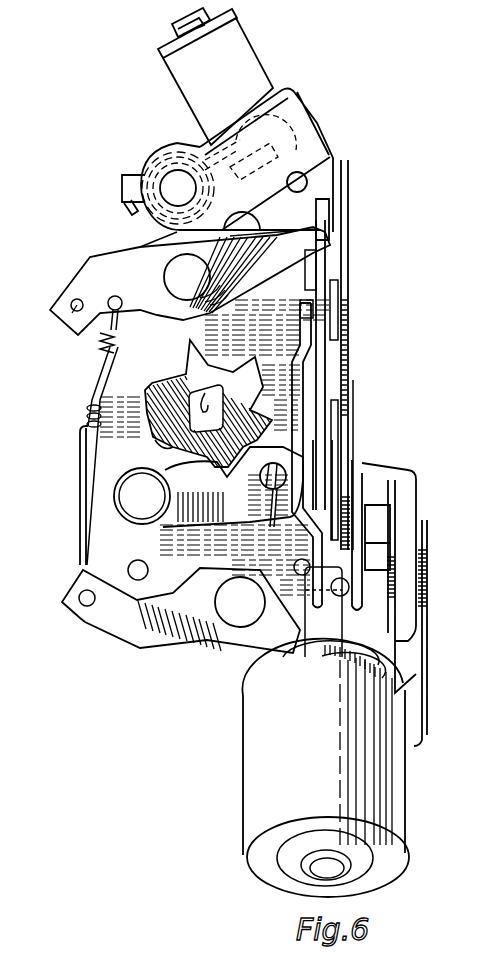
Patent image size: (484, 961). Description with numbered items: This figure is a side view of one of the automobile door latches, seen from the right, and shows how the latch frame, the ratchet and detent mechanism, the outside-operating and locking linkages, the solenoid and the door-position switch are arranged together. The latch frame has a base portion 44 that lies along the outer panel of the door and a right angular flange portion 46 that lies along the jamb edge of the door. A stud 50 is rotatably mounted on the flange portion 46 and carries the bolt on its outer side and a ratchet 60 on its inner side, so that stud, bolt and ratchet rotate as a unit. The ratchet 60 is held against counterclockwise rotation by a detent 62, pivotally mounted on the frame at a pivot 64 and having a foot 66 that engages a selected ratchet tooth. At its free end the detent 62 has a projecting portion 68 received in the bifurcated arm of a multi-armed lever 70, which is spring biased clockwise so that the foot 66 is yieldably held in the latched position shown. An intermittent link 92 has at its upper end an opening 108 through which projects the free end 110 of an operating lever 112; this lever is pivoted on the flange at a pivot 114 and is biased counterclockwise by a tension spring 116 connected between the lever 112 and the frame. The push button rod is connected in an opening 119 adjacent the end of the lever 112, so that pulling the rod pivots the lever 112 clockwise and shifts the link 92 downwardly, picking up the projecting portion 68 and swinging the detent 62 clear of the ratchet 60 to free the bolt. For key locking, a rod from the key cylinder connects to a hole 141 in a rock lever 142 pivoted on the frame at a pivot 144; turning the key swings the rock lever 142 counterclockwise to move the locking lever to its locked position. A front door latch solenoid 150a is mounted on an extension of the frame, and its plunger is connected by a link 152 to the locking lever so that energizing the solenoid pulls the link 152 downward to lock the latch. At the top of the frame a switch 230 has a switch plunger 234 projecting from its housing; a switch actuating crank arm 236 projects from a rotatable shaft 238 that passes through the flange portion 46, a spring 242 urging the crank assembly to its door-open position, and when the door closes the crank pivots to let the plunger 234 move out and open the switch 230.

The switch 230 is at (243, 68).
The switch plunger 234 is at (298, 110).
The switch actuating crank arm 236 is at (320, 150).
The rotatable shaft 238 is at (178, 186).
The opening 108 is at (320, 220).
The free end of operating lever 110 is at (350, 238).
The spring 242 is at (166, 228).
The pivot 114 is at (185, 282).
The operating lever 112 is at (268, 262).
The opening 119 is at (62, 312).
The tension spring 116 is at (100, 344).
The stud 50 is at (206, 402).
The ratchet 60 is at (170, 443).
The foot 66 is at (208, 462).
The pivot 64 is at (132, 498).
The detent 62 is at (188, 516).
The intermittent link 92 is at (323, 277).
The flange portion 46 is at (330, 298).
The base portion 44 is at (349, 328).
The link 152 is at (294, 420).
The multi-armed lever 70 is at (322, 446).
The projecting portion 68 is at (330, 470).
The hole 141 is at (80, 607).
The rock lever 142 is at (117, 626).
The pivot 144 is at (240, 612).
The front door latch solenoid 150a is at (256, 822).